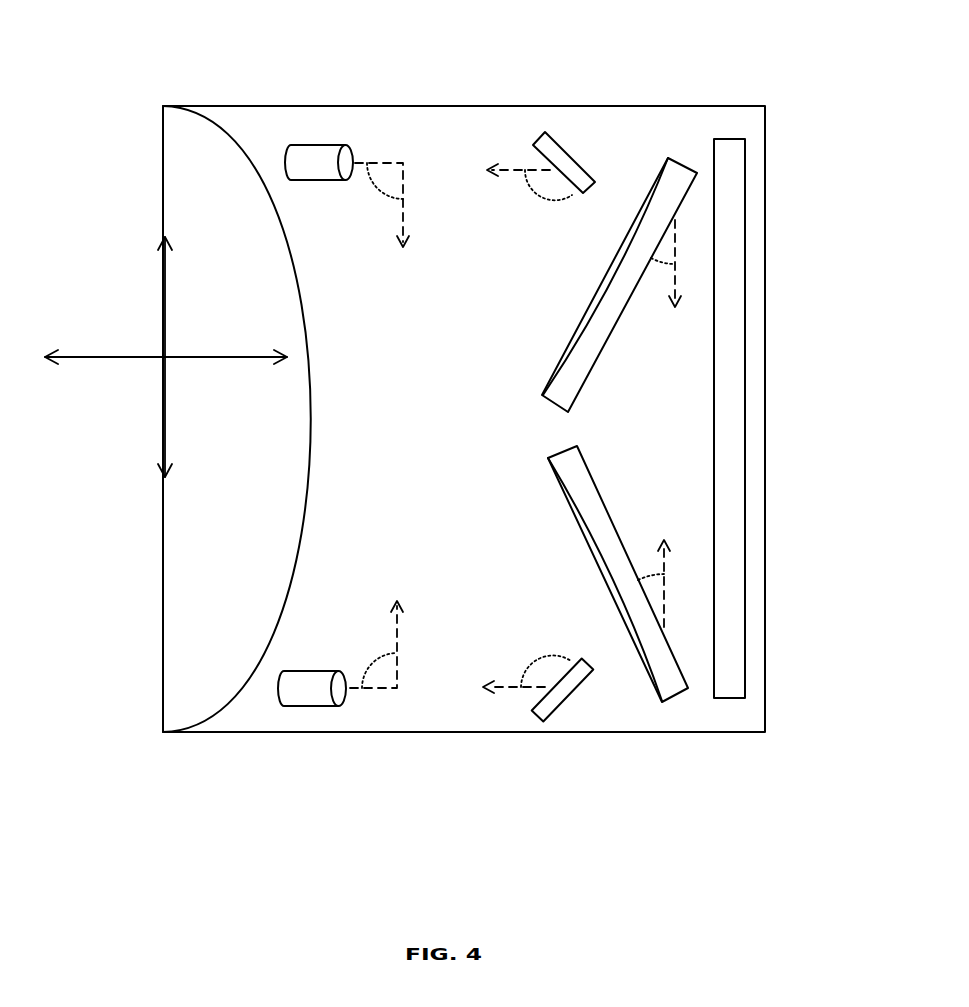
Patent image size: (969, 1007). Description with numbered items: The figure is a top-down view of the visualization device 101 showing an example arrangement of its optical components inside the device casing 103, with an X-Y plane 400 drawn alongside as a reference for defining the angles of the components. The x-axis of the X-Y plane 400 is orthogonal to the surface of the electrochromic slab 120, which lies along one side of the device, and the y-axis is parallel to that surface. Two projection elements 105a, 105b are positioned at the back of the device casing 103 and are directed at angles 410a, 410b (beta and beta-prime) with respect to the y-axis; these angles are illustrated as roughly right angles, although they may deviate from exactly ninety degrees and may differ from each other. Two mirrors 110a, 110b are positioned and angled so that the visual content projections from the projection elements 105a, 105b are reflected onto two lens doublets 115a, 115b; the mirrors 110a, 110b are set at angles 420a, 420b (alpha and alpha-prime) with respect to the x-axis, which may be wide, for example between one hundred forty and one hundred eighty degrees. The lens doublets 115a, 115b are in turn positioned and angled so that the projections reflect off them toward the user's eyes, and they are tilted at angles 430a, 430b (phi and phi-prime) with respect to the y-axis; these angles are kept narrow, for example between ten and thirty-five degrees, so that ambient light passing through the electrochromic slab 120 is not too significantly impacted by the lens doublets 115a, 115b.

The visualization device 101 is at (712, 825).
The device casing 103 is at (447, 106).
The projection element 105a is at (320, 145).
The projection element 105b is at (312, 706).
The mirror 110a is at (573, 153).
The mirror 110b is at (558, 708).
The lens doublet 115a is at (588, 380).
The lens doublet 115b is at (603, 483).
The electrochromic slab 120 is at (745, 190).
The X-Y plane 400 is at (166, 357).
The angle 410a is at (360, 208).
The angle 410b is at (362, 647).
The angle 420a is at (545, 205).
The angle 420b is at (527, 642).
The angle 430a is at (645, 298).
The angle 430b is at (643, 550).